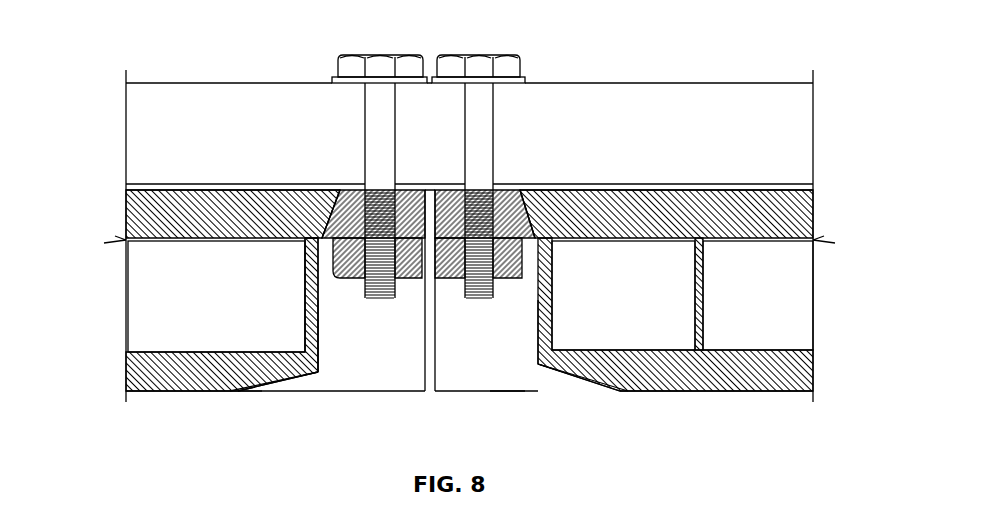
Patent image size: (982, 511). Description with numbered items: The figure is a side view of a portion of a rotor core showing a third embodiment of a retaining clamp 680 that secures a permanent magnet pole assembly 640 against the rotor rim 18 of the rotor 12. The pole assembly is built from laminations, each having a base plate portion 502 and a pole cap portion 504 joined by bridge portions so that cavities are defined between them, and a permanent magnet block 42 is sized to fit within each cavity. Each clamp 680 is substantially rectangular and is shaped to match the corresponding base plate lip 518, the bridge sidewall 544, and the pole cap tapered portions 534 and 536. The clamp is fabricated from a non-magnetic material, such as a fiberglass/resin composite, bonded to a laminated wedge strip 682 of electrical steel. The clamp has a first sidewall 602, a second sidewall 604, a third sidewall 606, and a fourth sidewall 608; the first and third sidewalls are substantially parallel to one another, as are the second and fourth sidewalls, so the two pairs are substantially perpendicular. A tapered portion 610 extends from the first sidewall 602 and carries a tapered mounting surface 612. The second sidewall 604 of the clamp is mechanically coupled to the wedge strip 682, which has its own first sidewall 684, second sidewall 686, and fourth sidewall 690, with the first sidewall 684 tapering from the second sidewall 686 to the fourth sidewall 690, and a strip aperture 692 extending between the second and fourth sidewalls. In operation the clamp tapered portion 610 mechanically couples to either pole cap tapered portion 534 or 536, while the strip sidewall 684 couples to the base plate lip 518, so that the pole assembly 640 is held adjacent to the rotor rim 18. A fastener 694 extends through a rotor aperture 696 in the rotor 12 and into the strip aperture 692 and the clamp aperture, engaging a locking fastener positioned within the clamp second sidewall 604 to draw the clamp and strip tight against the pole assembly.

The rotor 12 is at (806, 130).
The rotor rim 18 is at (682, 184).
The permanent magnet block 42 is at (227, 307).
The base plate portion 502 is at (806, 208).
The pole cap portion 504 is at (806, 368).
The base plate lip 518 is at (524, 212).
The pole cap tapered portion 534 is at (549, 391).
The pole cap tapered portion 536 is at (262, 392).
The bridge sidewall 544 is at (513, 392).
The first sidewall 602 is at (320, 332).
The second sidewall 604 is at (362, 279).
The third sidewall 606 is at (423, 358).
The fourth sidewall 608 is at (421, 189).
The tapered portion 610 is at (250, 397).
The tapered mounting surface 612 is at (316, 373).
The pole assembly 640 is at (732, 405).
The retaining clamp 680 is at (347, 433).
The laminated wedge strip 682 is at (327, 238).
The first sidewall 684 is at (345, 228).
The second sidewall 686 is at (362, 193).
The fourth sidewall 690 is at (307, 263).
The strip aperture 692 is at (316, 246).
The fastener 694 is at (482, 44).
The rotor aperture 696 is at (497, 90).